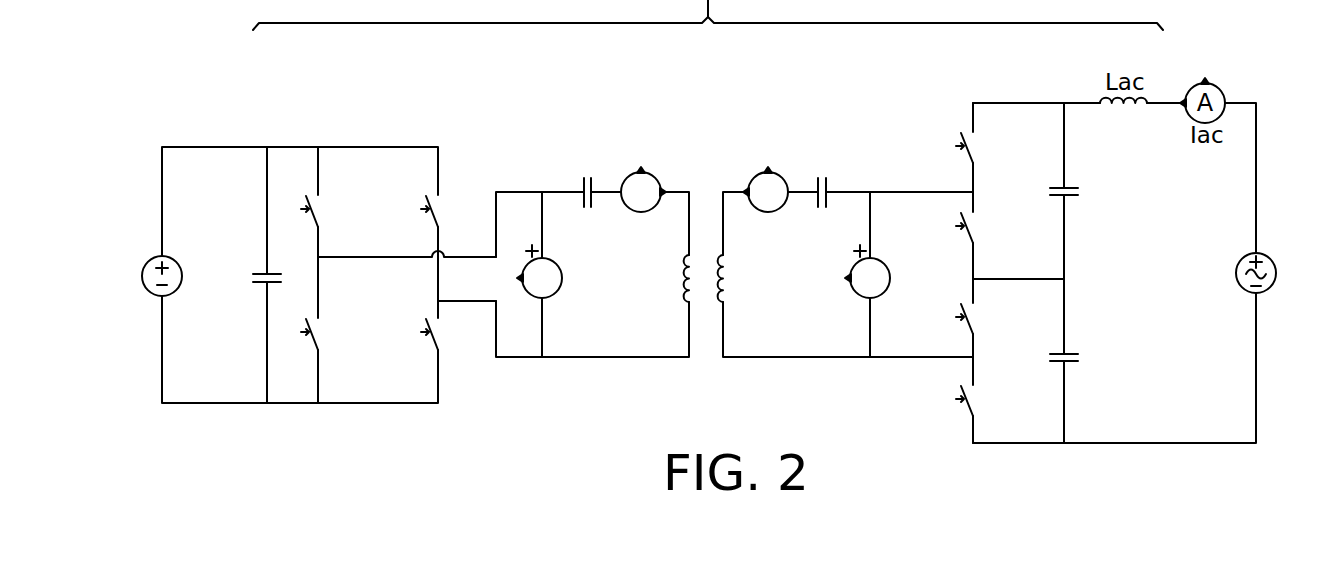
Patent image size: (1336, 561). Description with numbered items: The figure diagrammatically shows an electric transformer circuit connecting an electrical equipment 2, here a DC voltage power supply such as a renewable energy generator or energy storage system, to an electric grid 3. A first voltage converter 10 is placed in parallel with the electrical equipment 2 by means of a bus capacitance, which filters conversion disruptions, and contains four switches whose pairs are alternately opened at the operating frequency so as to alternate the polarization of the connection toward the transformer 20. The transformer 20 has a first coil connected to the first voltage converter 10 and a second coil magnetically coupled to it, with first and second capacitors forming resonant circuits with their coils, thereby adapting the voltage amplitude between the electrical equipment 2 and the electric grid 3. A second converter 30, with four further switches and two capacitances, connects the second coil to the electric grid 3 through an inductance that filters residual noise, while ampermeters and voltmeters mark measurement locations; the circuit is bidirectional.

The electrical equipment 2 is at (150, 262).
The electric grid 3 is at (1238, 262).
The first voltage converter 10 is at (445, 416).
The transformer 20 is at (536, 371).
The second converter 30 is at (1078, 91).